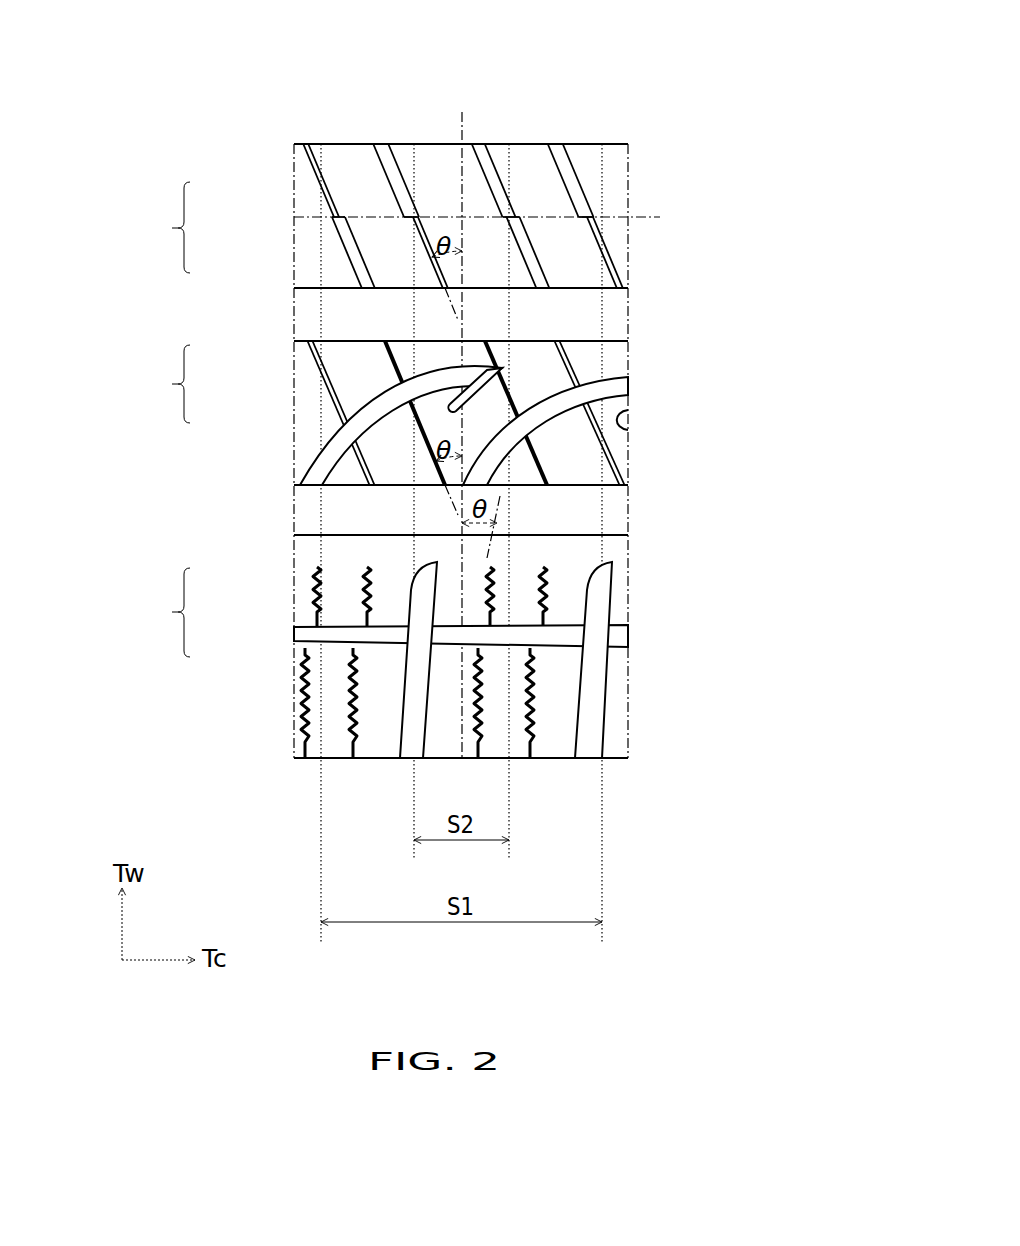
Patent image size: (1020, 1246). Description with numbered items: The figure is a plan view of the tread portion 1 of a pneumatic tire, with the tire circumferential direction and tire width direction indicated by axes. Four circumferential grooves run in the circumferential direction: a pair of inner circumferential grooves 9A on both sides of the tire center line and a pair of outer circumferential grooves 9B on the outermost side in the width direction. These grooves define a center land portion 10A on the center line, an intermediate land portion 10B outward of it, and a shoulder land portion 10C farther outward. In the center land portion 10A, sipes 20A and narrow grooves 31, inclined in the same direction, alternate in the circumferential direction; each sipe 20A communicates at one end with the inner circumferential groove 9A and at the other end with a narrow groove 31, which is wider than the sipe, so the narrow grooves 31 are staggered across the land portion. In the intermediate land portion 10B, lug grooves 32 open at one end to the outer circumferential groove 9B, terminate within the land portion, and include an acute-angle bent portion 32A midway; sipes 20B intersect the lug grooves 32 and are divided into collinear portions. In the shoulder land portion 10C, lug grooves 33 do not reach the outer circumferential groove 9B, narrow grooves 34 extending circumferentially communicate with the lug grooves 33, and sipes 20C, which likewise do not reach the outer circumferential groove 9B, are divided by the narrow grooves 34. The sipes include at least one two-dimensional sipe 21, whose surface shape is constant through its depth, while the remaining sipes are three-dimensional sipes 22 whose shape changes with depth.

The tread portion 1 is at (410, 110).
The inner circumferential groove 9A is at (617, 317).
The outer circumferential groove 9B is at (617, 512).
The center land portion 10A is at (598, 168).
The intermediate land portion 10B is at (617, 455).
The shoulder land portion 10C is at (617, 705).
The sipe 20A is at (136, 227).
The sipe 20B is at (136, 384).
The sipe 20C is at (136, 612).
The two-dimensional sipe 21 is at (493, 158).
The three-dimensional sipe 22 is at (328, 197).
The narrow groove 31 is at (563, 150).
The lug groove 32 is at (565, 398).
The bent portion 32A is at (505, 368).
The lug groove 33 is at (603, 585).
The narrow groove 34 is at (626, 638).